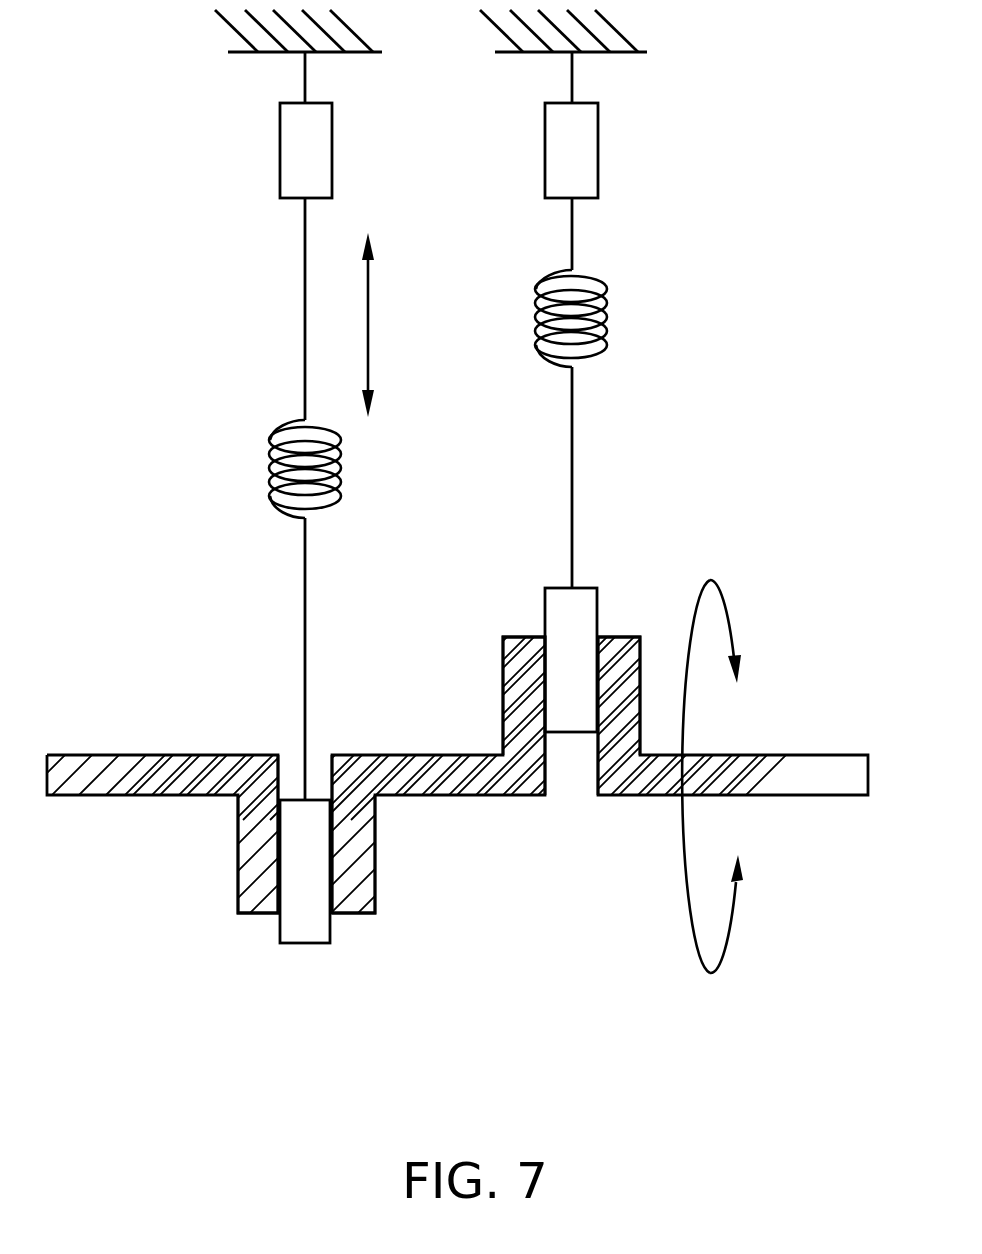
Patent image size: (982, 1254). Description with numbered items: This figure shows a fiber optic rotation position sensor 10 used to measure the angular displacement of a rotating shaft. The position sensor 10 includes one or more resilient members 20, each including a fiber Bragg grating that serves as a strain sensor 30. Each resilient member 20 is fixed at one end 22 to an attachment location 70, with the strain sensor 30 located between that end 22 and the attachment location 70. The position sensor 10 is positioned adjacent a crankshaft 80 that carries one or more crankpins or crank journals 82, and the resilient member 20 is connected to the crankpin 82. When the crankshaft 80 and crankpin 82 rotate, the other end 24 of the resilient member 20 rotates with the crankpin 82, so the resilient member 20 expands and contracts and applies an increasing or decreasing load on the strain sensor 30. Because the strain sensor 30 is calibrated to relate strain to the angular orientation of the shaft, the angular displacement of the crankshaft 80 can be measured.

The position sensor 10 is at (670, 157).
The resilient member 20 is at (270, 459).
The end of the resilient member 22 is at (272, 237).
The end of the resilient member 24 is at (296, 770).
The fiber Bragg grating 30 is at (290, 160).
The attachment location 70 is at (265, 54).
The crankshaft 80 is at (753, 753).
The crankpin 82 is at (238, 868).